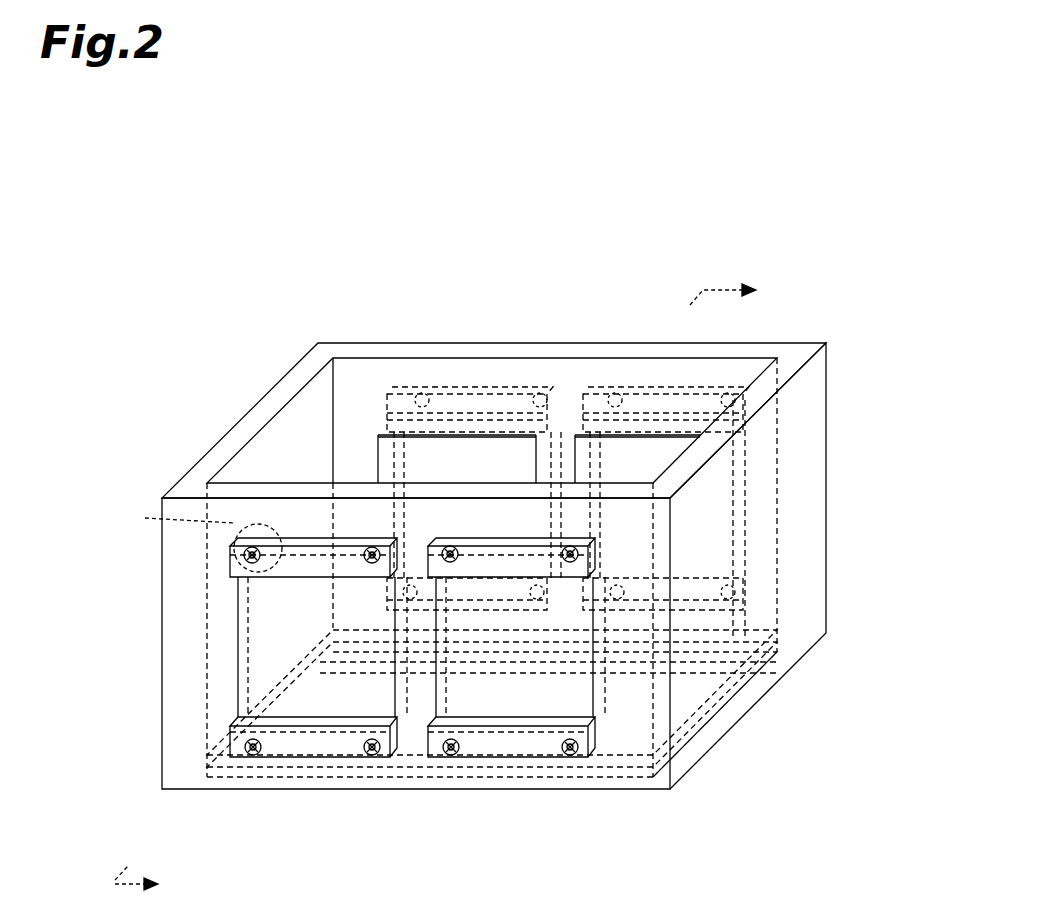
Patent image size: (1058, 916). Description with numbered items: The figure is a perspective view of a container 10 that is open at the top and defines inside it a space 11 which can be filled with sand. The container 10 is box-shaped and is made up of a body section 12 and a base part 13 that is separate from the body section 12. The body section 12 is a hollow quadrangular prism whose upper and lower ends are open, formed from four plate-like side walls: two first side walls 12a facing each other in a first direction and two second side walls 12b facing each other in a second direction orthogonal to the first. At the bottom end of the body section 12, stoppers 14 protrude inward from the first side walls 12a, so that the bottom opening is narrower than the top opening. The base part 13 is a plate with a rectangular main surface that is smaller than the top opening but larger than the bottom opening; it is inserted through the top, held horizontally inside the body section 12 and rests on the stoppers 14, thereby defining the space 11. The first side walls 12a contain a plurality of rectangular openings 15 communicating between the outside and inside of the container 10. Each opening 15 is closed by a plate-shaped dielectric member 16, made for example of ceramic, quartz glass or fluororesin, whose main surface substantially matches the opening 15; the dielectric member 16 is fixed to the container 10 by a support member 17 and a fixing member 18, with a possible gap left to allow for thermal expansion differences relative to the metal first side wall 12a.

The container 10 is at (802, 230).
The space 11 is at (265, 452).
The body section 12 is at (832, 372).
The first side walls 12a is at (782, 346).
The second side walls 12b is at (805, 478).
The base part 13 is at (698, 715).
The stoppers 14 is at (790, 652).
The openings 15 is at (245, 645).
The dielectric member 16 is at (330, 690).
The support member 17 is at (505, 388).
The fixing member 18 is at (422, 393).